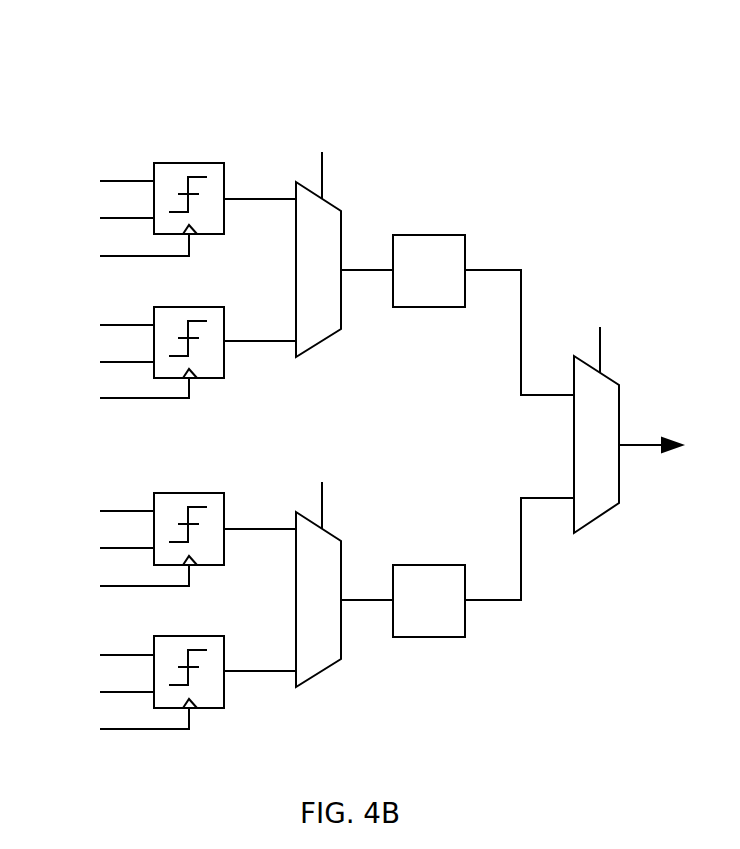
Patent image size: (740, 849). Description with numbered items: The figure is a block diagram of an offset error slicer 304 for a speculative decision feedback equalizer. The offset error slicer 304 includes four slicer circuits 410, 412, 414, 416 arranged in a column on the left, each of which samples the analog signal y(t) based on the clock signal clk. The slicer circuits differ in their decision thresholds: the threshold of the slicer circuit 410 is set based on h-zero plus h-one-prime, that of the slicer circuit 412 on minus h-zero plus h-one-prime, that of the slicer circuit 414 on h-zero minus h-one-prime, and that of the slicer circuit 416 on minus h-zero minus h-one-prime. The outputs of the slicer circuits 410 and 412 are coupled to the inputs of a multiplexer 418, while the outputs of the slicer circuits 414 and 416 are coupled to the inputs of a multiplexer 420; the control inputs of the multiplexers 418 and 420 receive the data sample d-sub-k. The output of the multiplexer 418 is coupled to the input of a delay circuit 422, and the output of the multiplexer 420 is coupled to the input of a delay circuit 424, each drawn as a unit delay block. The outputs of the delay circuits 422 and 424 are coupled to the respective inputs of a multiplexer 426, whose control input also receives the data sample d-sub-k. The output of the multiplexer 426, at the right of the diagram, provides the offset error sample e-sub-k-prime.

The offset error slicer 304 is at (120, 71).
The slicer circuit 410 is at (172, 163).
The slicer circuit 412 is at (197, 307).
The slicer circuit 414 is at (172, 493).
The slicer circuit 416 is at (197, 636).
The multiplexer 418 is at (326, 338).
The multiplexer 420 is at (326, 668).
The delay circuit 422 is at (440, 307).
The delay circuit 424 is at (440, 637).
The multiplexer 426 is at (598, 517).